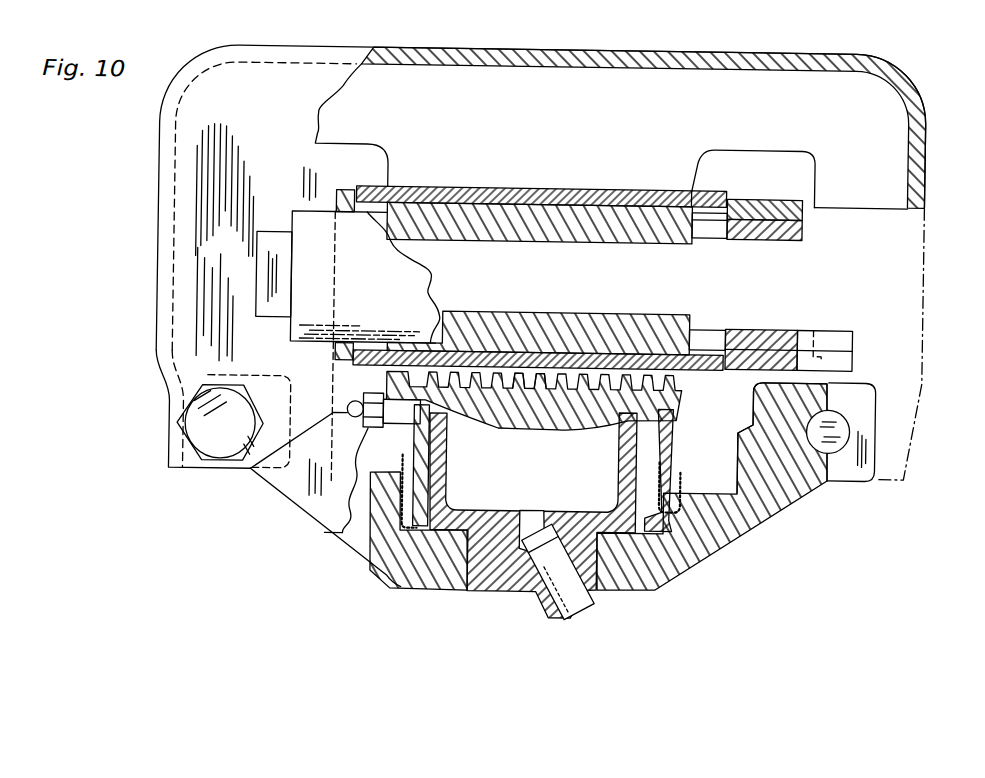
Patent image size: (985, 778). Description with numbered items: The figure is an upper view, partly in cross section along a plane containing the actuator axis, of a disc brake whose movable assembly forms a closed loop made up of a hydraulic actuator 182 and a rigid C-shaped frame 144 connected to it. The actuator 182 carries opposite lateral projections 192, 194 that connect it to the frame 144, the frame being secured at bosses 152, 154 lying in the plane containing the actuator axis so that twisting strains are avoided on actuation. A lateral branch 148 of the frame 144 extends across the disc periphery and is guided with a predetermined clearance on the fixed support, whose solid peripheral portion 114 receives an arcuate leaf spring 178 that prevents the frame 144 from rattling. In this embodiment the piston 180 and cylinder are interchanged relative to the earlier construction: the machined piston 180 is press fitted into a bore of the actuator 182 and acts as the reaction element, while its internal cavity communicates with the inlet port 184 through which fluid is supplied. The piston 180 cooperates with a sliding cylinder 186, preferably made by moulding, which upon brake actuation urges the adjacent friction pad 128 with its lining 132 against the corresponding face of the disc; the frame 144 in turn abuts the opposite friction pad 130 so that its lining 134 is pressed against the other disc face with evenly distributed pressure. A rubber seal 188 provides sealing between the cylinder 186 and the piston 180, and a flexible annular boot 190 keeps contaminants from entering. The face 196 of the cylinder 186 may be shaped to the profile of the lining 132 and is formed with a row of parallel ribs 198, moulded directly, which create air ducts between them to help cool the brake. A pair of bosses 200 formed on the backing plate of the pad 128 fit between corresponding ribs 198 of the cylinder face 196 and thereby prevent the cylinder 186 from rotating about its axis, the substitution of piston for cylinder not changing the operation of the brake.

The solid peripheral portion 114 is at (410, 294).
The friction pad 128 is at (708, 362).
The friction pad 130 is at (721, 190).
The lining 132 is at (693, 319).
The lining 134 is at (637, 224).
The rigid C-shaped frame 144 is at (901, 78).
The lateral branch 148 is at (169, 223).
The boss 152 is at (280, 465).
The boss 154 is at (843, 462).
The arcuate leaf spring 178 is at (277, 249).
The piston 180 is at (532, 514).
The actuator 182 is at (417, 568).
The inlet port 184 is at (574, 586).
The sliding cylinder 186 is at (655, 430).
The rubber seal 188 is at (661, 581).
The flexible annular boot 190 is at (672, 464).
The lateral projection 192 is at (321, 506).
The lateral projection 194 is at (733, 509).
The face of the cylinder 196 is at (560, 416).
The parallel ribs 198 is at (623, 345).
The bosses 200 is at (548, 372).